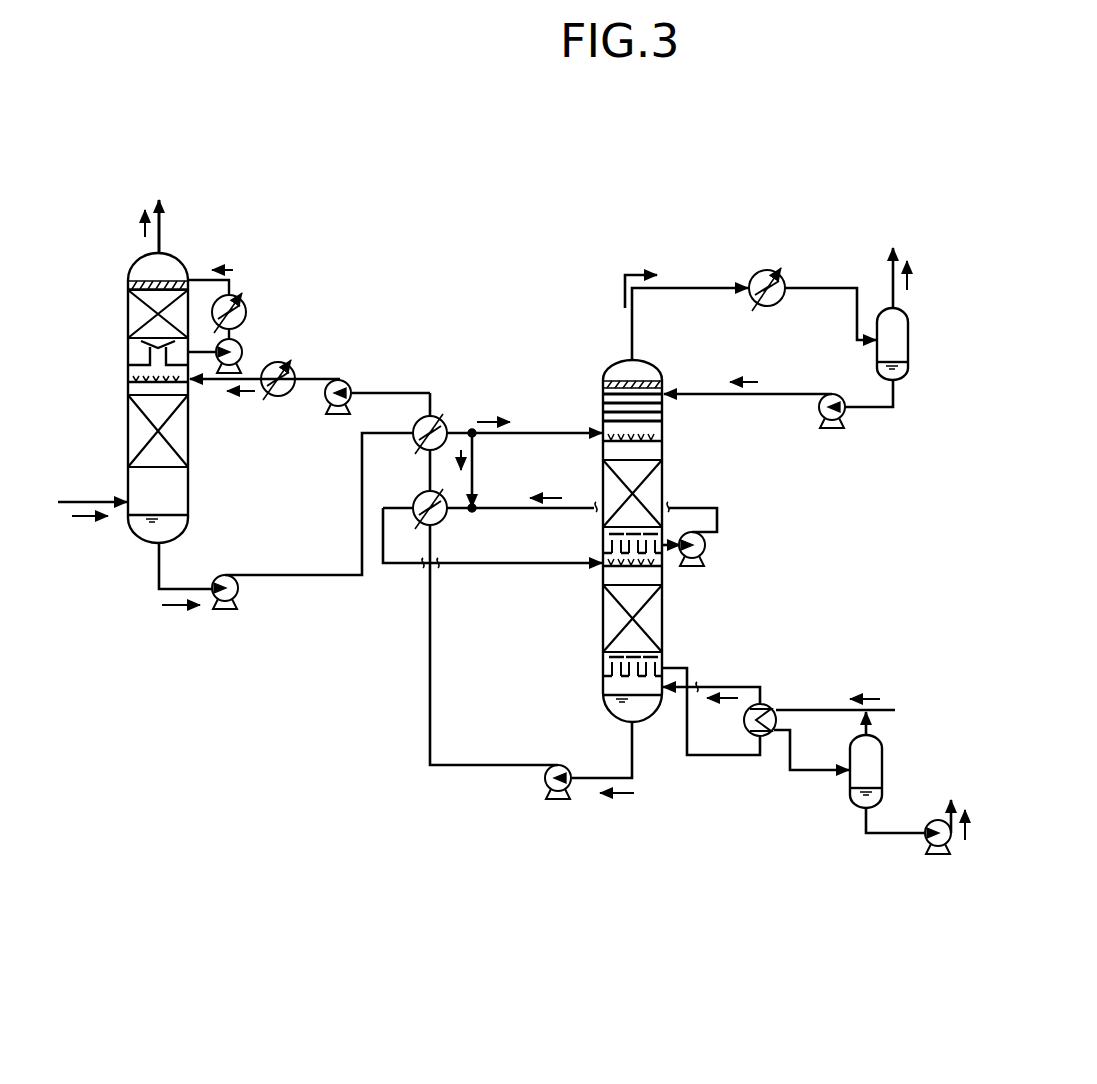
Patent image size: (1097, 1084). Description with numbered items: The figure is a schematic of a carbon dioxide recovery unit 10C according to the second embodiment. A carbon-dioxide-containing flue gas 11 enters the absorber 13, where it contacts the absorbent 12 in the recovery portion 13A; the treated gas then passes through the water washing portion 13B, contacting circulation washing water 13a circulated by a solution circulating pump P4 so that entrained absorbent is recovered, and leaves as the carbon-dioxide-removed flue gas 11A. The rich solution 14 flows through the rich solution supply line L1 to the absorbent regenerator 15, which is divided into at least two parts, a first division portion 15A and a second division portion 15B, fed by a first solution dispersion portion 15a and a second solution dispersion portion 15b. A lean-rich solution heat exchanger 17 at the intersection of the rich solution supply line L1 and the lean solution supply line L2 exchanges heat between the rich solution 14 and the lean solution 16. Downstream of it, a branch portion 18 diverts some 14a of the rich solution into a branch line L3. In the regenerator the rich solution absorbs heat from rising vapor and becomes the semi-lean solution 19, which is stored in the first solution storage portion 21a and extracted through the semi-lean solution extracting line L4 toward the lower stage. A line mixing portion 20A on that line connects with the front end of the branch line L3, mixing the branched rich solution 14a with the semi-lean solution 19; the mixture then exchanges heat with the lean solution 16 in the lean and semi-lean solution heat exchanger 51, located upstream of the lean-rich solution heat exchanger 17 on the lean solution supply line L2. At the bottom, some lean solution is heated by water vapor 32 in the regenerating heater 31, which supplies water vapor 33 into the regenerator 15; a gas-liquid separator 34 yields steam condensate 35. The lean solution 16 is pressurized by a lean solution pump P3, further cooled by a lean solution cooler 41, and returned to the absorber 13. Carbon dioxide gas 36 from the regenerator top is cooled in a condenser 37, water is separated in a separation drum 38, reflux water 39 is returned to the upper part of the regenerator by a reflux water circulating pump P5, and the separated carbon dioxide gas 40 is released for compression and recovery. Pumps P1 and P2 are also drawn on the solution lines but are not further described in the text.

The CO2 recovery unit 10C is at (447, 190).
The CO2-containing flue gas 11 is at (108, 522).
The CO2-removed flue gas 11A is at (141, 228).
The CO2 absorbent 12 is at (243, 394).
The CO2 absorber 13 is at (176, 252).
The CO2 recovery portion 13A is at (135, 433).
The water washing portion 13B is at (135, 315).
The circulation washing water 13a is at (233, 250).
The rich solution 14 is at (182, 608).
The branched rich solution 14a is at (455, 431).
The absorbent regenerator 15 is at (606, 342).
The first division portion 15A is at (656, 480).
The second division portion 15B is at (656, 623).
The first solution dispersion portion 15a is at (648, 435).
The second solution dispersion portion 15b is at (613, 546).
The lean solution 16 is at (620, 797).
The lean-rich solution heat exchanger 17 is at (419, 451).
The branch portion 18 is at (461, 450).
The semi-lean solution 19 is at (545, 497).
The line mixing portion 20A is at (470, 511).
The first solution storage portion 21a is at (665, 566).
The regenerating heater 31 is at (772, 706).
The water vapor 32 is at (864, 697).
The water vapor 33 is at (721, 703).
The gas-liquid separator 34 is at (880, 768).
The steam condensate 35 is at (970, 828).
The CO2 gas 36 is at (628, 274).
The condenser 37 is at (758, 271).
The separation drum 38 is at (905, 338).
The reflux water 39 is at (908, 366).
The CO2 gas 40 is at (912, 276).
The lean solution cooler 41 is at (281, 400).
The lean and semi-lean solution heat exchanger 51 is at (419, 526).
The rich solution supply line L1 is at (319, 576).
The lean solution supply line L2 is at (429, 675).
The branch line L3 is at (479, 461).
The semi-lean solution extracting line L4 is at (513, 511).
The pump P1 is at (224, 576).
The pump P2 is at (568, 766).
The lean solution pump P3 is at (343, 380).
The solution circulating pump P4 is at (243, 348).
The reflux water circulating pump P5 is at (838, 396).